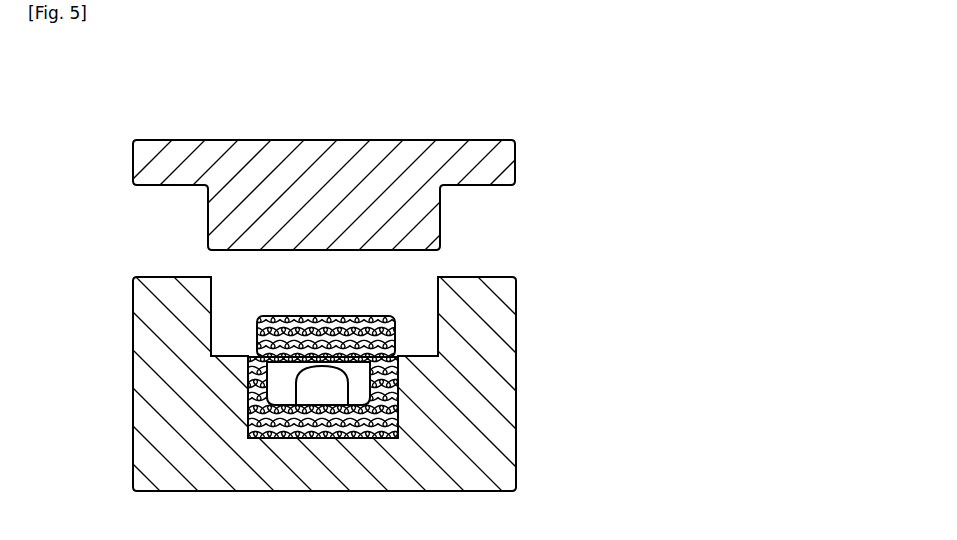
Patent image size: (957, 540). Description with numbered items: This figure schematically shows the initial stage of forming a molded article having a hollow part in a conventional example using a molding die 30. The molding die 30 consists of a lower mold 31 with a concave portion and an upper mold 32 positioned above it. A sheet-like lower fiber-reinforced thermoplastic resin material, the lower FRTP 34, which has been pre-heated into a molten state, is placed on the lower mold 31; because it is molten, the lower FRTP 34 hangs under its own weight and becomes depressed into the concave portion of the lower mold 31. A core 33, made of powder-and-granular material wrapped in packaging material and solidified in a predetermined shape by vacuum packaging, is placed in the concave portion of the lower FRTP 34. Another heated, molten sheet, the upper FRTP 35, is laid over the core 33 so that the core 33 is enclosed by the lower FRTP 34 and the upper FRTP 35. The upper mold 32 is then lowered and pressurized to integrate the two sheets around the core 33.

The molding die 30 is at (515, 230).
The lower mold 31 is at (516, 377).
The upper mold 32 is at (515, 139).
The core 33 is at (315, 389).
The lower fiber-reinforced thermoplastic resin material (lower FRTP) 34 is at (262, 439).
The upper fiber-reinforced thermoplastic resin material (upper FRTP) 35 is at (262, 320).